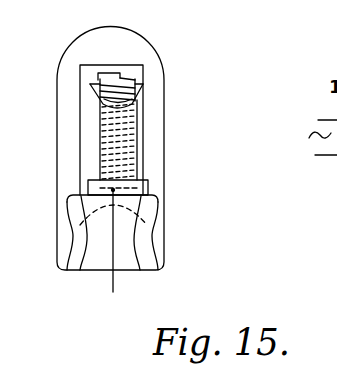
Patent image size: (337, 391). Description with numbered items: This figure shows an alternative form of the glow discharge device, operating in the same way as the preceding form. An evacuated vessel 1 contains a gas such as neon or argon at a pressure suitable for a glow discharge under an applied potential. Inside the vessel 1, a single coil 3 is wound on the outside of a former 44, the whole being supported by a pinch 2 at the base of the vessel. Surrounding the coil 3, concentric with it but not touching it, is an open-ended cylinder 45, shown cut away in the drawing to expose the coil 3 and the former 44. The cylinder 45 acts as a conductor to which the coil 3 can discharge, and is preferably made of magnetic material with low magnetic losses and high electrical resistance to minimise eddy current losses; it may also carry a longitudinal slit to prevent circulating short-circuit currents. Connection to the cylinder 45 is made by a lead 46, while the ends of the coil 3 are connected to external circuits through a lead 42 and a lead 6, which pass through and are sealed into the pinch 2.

The evacuated vessel 1 is at (157, 50).
The former 44 is at (130, 77).
The coil 3 is at (122, 102).
The open-ended cylinder 45 is at (144, 152).
The pinch 2 is at (150, 200).
The lead 42 is at (77, 283).
The lead 46 is at (143, 280).
The lead 6 is at (110, 280).